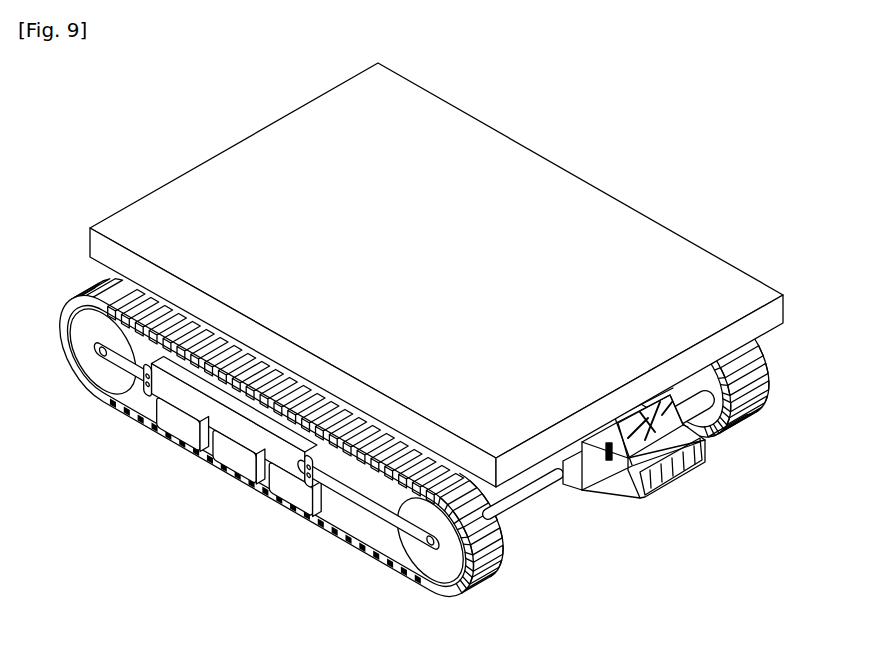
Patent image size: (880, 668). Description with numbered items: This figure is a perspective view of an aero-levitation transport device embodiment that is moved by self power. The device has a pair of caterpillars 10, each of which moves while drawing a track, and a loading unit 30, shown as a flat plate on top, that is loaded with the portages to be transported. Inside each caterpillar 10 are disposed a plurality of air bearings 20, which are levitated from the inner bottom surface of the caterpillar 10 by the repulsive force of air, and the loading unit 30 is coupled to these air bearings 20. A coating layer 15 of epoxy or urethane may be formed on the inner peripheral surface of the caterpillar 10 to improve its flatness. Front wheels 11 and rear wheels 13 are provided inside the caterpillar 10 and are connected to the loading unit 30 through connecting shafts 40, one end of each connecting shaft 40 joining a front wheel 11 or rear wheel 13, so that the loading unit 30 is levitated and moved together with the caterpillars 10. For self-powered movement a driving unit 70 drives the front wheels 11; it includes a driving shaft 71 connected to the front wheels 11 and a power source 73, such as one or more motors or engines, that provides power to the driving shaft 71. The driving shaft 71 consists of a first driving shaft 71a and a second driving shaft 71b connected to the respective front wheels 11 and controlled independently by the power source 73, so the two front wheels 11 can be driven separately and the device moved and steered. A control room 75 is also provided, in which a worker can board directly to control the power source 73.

The caterpillar 10 is at (503, 567).
The front wheel 11 is at (432, 567).
The rear wheel 13 is at (95, 368).
The coating layer 15 is at (152, 404).
The air bearing 20 is at (293, 477).
The loading unit 30 is at (604, 216).
The connecting shaft 40 is at (112, 404).
The driving unit 70 is at (654, 499).
The driving shaft 71 is at (629, 472).
The first driving shaft 71a is at (520, 494).
The second driving shaft 71b is at (688, 397).
The power source 73 is at (592, 478).
The control room 75 is at (657, 460).